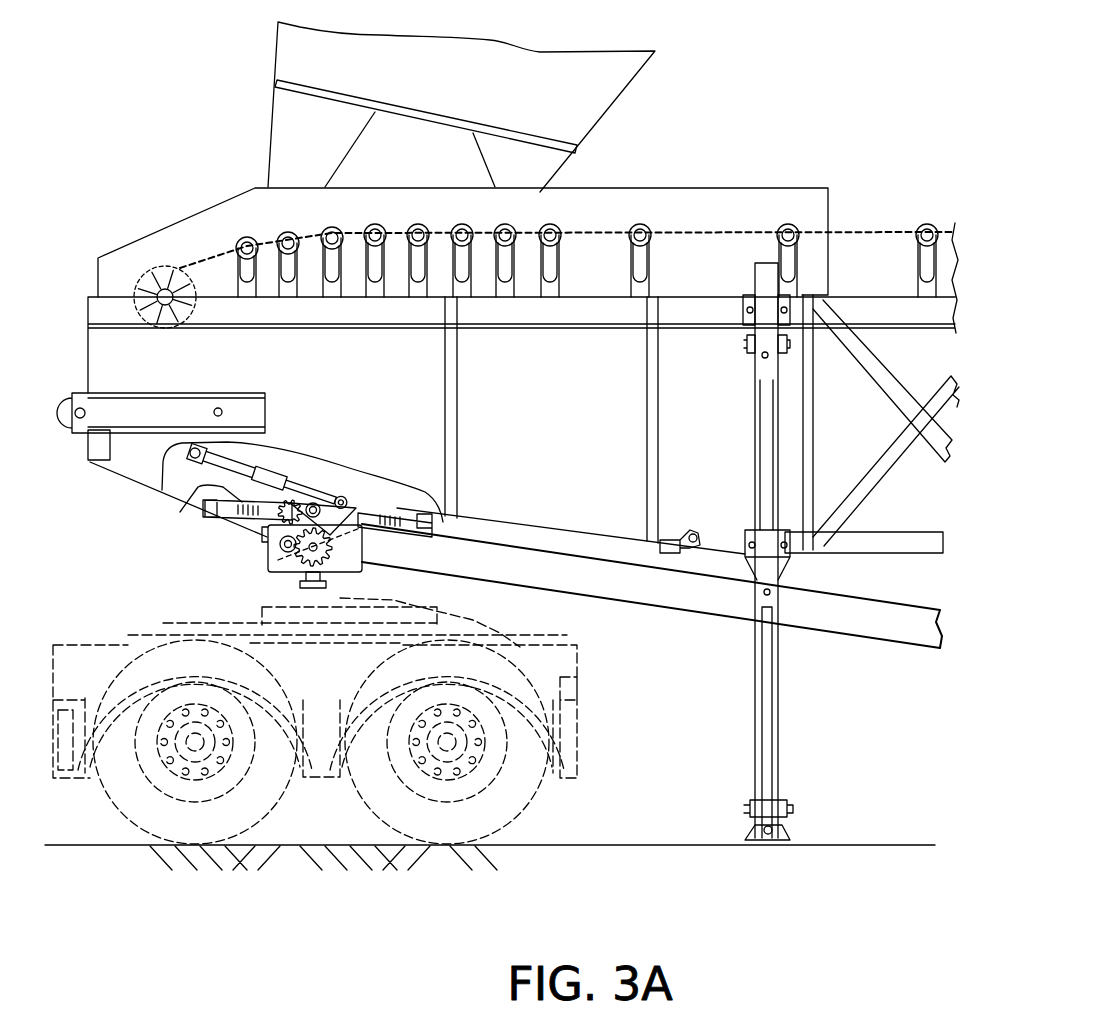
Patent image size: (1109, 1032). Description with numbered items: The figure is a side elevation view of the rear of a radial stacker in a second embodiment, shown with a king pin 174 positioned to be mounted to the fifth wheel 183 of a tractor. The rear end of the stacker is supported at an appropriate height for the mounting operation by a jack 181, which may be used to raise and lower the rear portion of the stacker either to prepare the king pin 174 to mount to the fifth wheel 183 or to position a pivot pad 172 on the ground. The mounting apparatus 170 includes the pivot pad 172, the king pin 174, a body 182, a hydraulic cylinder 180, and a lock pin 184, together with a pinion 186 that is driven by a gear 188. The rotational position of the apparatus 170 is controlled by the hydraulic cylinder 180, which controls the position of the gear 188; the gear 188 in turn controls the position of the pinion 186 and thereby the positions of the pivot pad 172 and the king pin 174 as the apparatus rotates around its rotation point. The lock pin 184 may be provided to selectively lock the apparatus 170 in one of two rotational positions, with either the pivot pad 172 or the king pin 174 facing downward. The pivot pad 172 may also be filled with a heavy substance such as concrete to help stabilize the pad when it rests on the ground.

The apparatus 170 is at (250, 538).
The pivot pad 172 is at (212, 487).
The king pin 174 is at (305, 584).
The hydraulic cylinder 180 is at (320, 490).
The jack 181 is at (774, 694).
The body 182 is at (362, 547).
The fifth wheel 183 is at (345, 602).
The lock pin 184 is at (285, 549).
The pinion 186 is at (345, 520).
The gear 188 is at (294, 503).